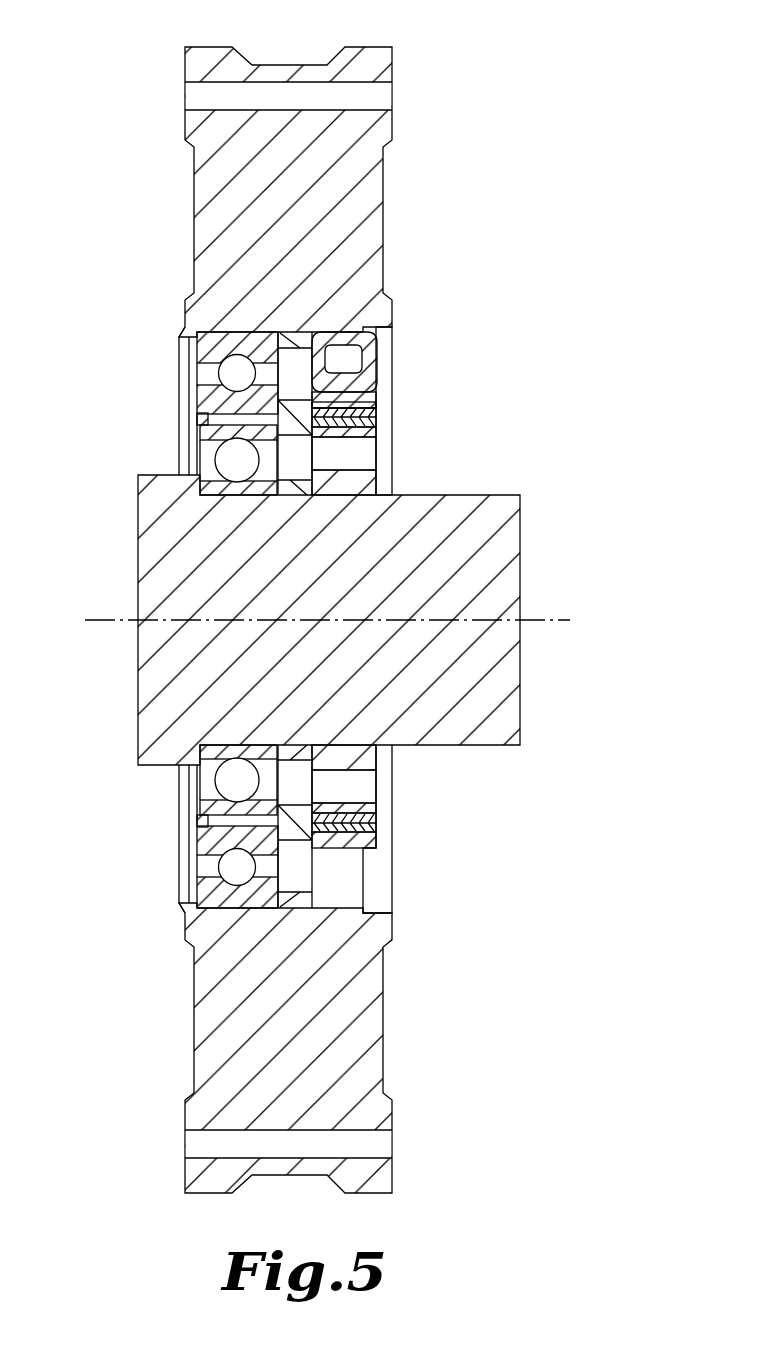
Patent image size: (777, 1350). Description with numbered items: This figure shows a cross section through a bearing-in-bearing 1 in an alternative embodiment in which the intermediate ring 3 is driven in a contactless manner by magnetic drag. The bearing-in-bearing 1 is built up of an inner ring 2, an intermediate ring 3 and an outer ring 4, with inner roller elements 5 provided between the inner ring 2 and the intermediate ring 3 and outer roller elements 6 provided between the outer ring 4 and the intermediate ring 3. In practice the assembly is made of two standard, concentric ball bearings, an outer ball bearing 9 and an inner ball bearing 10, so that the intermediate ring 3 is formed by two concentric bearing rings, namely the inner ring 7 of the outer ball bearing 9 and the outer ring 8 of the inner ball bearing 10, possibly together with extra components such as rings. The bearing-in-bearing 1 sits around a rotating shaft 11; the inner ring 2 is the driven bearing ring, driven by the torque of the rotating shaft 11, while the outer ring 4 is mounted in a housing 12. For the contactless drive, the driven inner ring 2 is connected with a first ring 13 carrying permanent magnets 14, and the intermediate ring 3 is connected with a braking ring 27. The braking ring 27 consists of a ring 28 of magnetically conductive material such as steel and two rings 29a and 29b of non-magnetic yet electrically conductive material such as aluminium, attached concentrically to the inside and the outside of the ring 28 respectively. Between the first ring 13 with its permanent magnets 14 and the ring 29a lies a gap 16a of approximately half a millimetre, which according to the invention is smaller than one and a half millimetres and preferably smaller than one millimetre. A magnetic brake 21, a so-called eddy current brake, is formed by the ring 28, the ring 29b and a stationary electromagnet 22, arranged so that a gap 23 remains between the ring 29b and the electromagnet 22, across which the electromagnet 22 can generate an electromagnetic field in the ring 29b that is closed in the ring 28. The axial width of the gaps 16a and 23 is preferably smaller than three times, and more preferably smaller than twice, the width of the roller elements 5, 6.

The bearing-in-bearing 1 is at (482, 68).
The inner ring 2 is at (195, 488).
The intermediate ring 3 is at (200, 421).
The outer ring 4 is at (187, 337).
The inner roller elements 5 is at (232, 460).
The outer roller elements 6 is at (230, 373).
The inner ring of the outer ball bearing 7 is at (217, 398).
The outer ring of the inner ball bearing 8 is at (205, 440).
The outer ball bearing 9 is at (155, 606).
The inner ball bearing 10 is at (147, 610).
The rotating shaft 11 is at (508, 582).
The housing 12 is at (218, 132).
The first ring 13 is at (365, 486).
The permanent magnets 14 is at (360, 466).
The gap 16a is at (370, 453).
The magnetic brake 21 is at (443, 572).
The electromagnet 22 is at (370, 362).
The gap 23 is at (360, 398).
The braking ring 27 is at (443, 607).
The ring of magnetically conductive material 28 is at (360, 418).
The ring of non-magnetic yet electrically conductive material 29a is at (355, 433).
The ring of non-magnetic yet electrically conductive material 29b is at (365, 405).